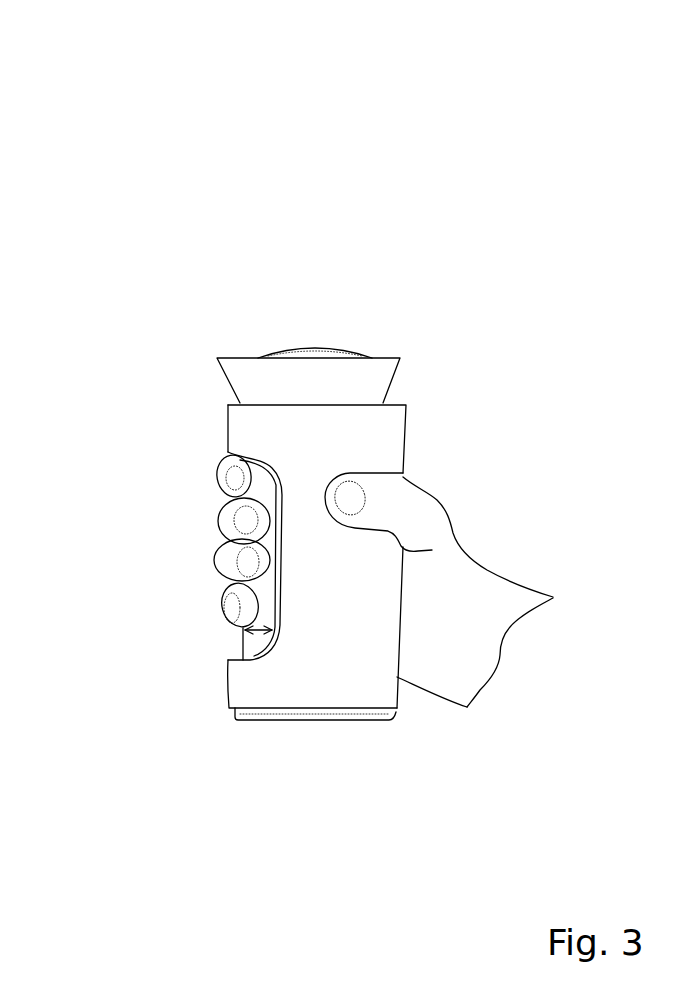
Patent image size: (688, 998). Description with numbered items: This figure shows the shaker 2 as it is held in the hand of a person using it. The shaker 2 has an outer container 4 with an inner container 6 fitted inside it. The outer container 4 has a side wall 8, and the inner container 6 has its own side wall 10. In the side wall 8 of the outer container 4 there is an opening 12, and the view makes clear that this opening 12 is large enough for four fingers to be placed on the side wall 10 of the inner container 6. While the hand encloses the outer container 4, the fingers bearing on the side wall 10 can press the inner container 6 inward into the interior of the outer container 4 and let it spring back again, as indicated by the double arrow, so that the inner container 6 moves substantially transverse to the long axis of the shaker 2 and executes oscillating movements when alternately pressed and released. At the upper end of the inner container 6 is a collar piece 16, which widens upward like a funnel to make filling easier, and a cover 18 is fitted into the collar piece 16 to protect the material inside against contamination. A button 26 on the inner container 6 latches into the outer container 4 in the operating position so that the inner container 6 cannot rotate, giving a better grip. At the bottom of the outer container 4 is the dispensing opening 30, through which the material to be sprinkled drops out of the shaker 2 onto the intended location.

The shaker 2 is at (207, 127).
The outer container 4 is at (407, 422).
The inner container 6 is at (243, 643).
The side wall 8 is at (357, 592).
The side wall 10 is at (278, 495).
The opening 12 is at (289, 580).
The collar piece 16 is at (253, 382).
The cover 18 is at (325, 348).
The button 26 is at (398, 623).
The dispensing opening 30 is at (310, 730).